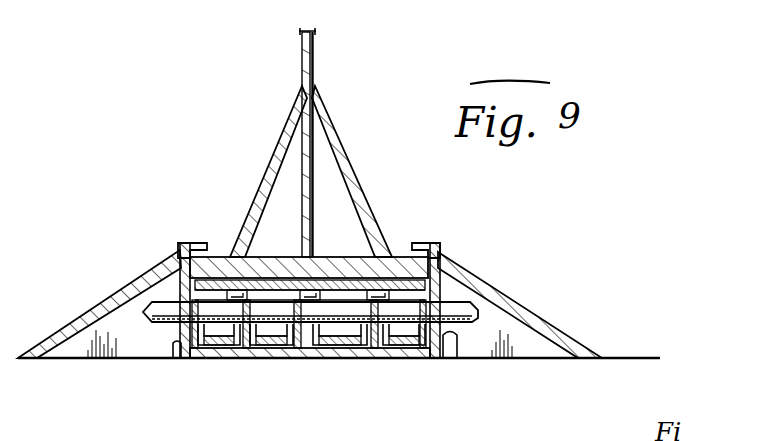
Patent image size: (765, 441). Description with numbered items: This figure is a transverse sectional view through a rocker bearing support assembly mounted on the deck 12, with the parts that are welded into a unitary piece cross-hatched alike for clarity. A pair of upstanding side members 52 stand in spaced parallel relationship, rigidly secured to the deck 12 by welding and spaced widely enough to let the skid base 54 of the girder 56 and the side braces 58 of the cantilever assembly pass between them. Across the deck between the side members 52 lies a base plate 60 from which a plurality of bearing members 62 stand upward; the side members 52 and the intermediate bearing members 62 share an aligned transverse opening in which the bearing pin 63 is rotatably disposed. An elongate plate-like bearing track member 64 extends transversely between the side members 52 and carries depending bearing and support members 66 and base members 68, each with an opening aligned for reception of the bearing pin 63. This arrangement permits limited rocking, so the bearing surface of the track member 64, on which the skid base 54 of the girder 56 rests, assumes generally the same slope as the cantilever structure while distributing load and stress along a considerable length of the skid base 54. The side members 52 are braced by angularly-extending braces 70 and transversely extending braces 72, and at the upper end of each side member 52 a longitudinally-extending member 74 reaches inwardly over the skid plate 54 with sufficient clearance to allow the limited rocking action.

The deck 12 is at (628, 358).
The upstanding side members 52 is at (174, 290).
The skid base 54 is at (405, 256).
The girder 56 is at (311, 160).
The side braces 58 is at (280, 148).
The base plate 60 is at (365, 340).
The bearing members 62 is at (235, 340).
The bearing pin 63 is at (455, 340).
The bearing track member 64 is at (282, 257).
The bearing and support members 66 is at (215, 340).
The base members 68 is at (283, 340).
The angularly-extending braces 70 is at (98, 310).
The transversely extending braces 72 is at (82, 345).
The longitudinally-extending member 74 is at (200, 243).